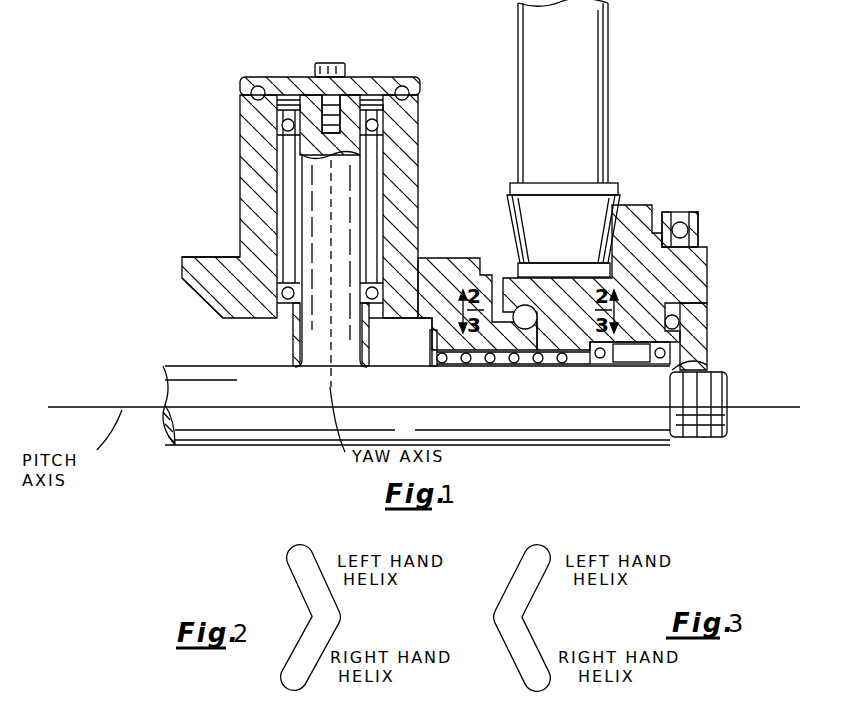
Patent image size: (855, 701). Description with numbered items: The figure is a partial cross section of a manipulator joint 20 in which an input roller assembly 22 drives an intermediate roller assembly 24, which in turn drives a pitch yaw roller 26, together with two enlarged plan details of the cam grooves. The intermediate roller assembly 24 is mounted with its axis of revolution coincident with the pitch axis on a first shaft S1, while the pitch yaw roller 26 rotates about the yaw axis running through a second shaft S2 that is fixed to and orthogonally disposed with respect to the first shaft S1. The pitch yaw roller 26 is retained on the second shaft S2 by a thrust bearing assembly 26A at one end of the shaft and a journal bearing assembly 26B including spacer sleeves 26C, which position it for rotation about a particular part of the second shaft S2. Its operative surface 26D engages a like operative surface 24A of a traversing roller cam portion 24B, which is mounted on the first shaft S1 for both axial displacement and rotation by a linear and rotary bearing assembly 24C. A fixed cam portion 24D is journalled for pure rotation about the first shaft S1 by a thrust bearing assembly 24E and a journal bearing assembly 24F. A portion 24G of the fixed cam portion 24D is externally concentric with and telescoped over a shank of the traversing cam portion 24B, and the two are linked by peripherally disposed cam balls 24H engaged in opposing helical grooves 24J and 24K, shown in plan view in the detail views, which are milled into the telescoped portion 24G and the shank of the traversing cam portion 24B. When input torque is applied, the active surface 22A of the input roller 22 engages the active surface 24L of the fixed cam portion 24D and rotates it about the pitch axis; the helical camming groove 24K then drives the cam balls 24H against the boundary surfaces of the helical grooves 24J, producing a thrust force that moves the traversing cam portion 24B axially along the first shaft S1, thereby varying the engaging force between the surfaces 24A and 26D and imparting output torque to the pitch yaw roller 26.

In FIG. 1, the manipulator joint 20 is at (648, 120).
In FIG. 1, the input roller assembly 22 is at (570, 66).
In FIG. 1, the active surface of input roller 22A is at (508, 221).
In FIG. 1, the intermediate roller assembly 24 is at (591, 285).
In FIG. 1, the operative surface of traversing roller cam portion 24A is at (456, 300).
In FIG. 1, the traversing roller cam portion 24B is at (510, 333).
In FIG. 1, the linear and rotary bearing assembly 24C is at (436, 368).
In FIG. 1, the fixed cam portion 24D is at (708, 267).
In FIG. 1, the thrust bearing assembly 24E is at (680, 321).
In FIG. 1, the journal bearing assembly 24F is at (674, 364).
In FIG. 1, the telescoped portion of fixed roller cam portion 24G is at (515, 297).
In FIG. 1, the cam balls 24H is at (528, 332).
In FIG. 2, the helical groove 24J is at (278, 571).
In FIG. 3, the helical camming groove 24K is at (550, 592).
In FIG. 1, the active surface of fixed roller cam portion 24L is at (622, 229).
In FIG. 1, the pitch yaw roller 26 is at (292, 201).
In FIG. 1, the thrust bearing assembly 26A is at (308, 85).
In FIG. 1, the journal bearing assembly 26B is at (383, 122).
In FIG. 1, the spacer sleeves 26C is at (294, 335).
In FIG. 1, the operative surface of pitch yaw roller 26D is at (202, 297).
In FIG. 1, the first shaft S1 is at (182, 380).
In FIG. 1, the second shaft S2 is at (338, 182).